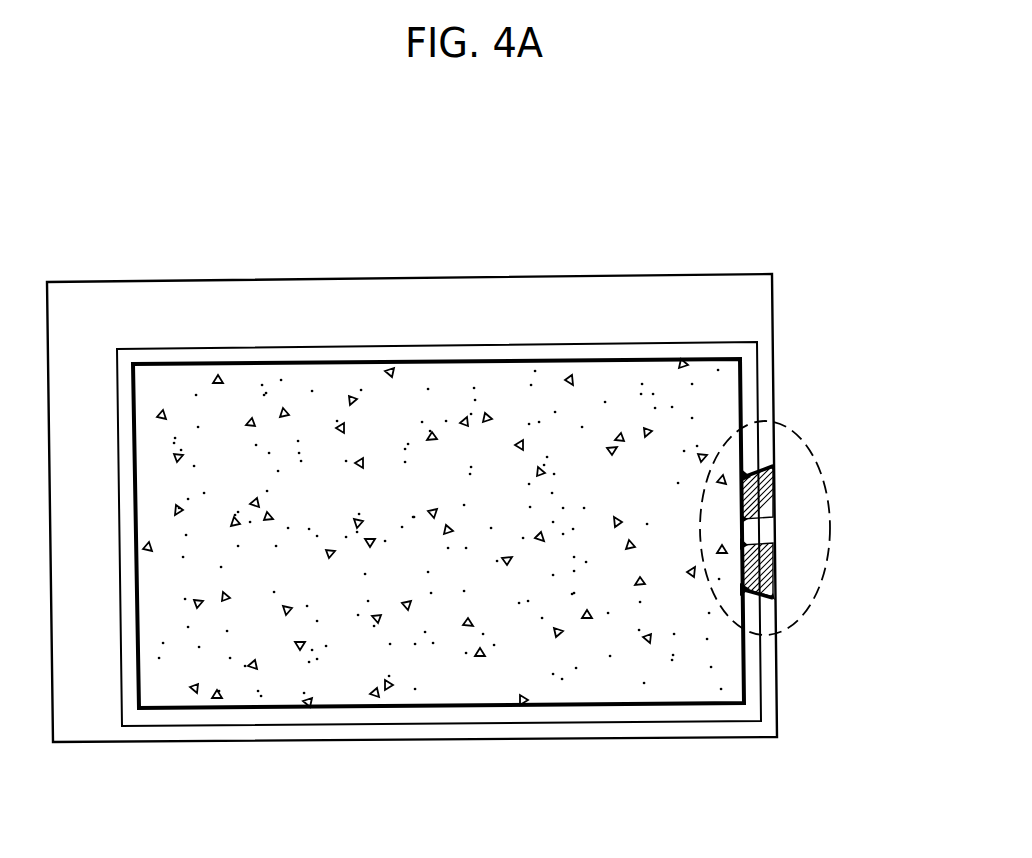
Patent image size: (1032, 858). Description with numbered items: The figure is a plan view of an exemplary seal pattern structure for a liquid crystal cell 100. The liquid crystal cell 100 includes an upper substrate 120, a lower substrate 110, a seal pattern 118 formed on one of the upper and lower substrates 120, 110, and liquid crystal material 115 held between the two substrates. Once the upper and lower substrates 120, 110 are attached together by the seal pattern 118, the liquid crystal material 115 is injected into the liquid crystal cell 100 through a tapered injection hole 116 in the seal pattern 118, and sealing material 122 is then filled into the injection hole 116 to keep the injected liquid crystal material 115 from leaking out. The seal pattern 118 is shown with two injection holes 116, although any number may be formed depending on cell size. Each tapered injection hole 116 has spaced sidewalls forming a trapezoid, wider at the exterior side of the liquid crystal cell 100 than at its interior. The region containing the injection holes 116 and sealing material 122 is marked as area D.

The liquid crystal cell 100 is at (781, 246).
The lower substrate 110 is at (697, 312).
The upper substrate 120 is at (750, 378).
The liquid crystal material 115 is at (660, 668).
The tapered injection hole 116 is at (760, 468).
The seal pattern 118 is at (748, 686).
The sealing material 122 is at (774, 567).
The area D is at (831, 528).